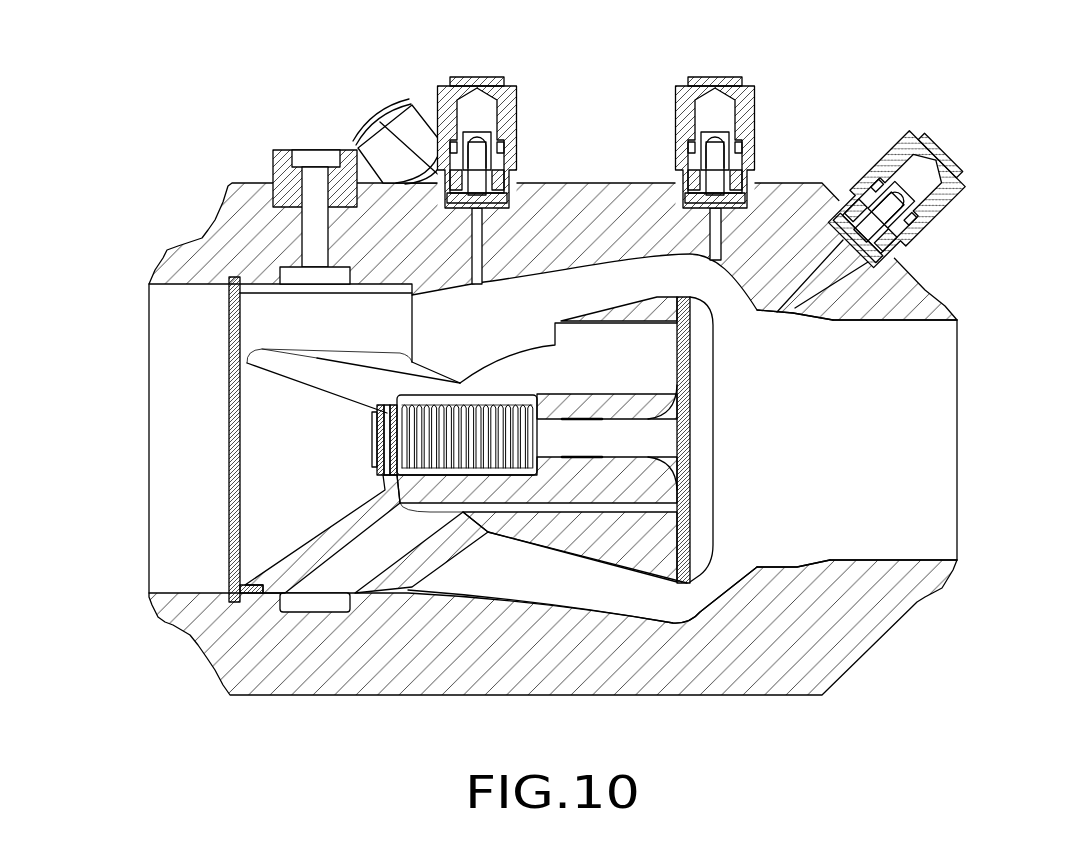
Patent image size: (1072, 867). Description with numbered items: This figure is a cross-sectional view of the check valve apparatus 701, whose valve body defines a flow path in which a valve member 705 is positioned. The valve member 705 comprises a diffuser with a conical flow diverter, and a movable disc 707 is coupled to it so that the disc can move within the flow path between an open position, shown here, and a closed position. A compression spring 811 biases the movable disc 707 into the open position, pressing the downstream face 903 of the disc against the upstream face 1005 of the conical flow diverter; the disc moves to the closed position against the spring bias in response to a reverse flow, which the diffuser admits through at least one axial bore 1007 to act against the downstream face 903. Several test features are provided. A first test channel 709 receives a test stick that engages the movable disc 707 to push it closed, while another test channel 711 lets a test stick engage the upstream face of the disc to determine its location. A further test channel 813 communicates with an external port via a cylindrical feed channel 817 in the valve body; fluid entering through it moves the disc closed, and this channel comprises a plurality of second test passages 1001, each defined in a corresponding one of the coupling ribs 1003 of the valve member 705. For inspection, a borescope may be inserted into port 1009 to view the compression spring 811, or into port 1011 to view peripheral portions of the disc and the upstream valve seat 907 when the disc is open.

The check valve apparatus 701 is at (833, 140).
The valve member 705 is at (629, 583).
The movable disc 707 is at (742, 479).
The first test channel 709 is at (360, 112).
The test channel 711 is at (948, 226).
The compression spring 811 is at (485, 408).
The test channel 813 is at (268, 142).
The cylindrical feed channel 817 is at (313, 607).
The downstream face 903 is at (677, 350).
The upstream valve seat 907 is at (712, 322).
The second test passages 1001 is at (368, 560).
The coupling ribs 1003 is at (460, 553).
The upstream face 1005 is at (697, 573).
The axial bore 1007 is at (572, 377).
The port 1009 is at (535, 80).
The port 1011 is at (773, 87).